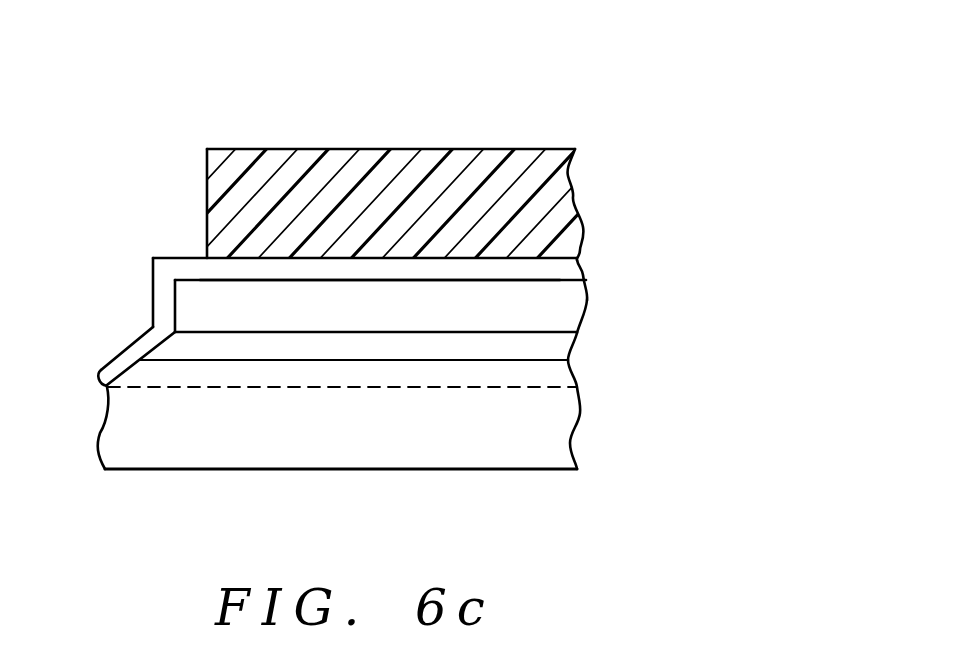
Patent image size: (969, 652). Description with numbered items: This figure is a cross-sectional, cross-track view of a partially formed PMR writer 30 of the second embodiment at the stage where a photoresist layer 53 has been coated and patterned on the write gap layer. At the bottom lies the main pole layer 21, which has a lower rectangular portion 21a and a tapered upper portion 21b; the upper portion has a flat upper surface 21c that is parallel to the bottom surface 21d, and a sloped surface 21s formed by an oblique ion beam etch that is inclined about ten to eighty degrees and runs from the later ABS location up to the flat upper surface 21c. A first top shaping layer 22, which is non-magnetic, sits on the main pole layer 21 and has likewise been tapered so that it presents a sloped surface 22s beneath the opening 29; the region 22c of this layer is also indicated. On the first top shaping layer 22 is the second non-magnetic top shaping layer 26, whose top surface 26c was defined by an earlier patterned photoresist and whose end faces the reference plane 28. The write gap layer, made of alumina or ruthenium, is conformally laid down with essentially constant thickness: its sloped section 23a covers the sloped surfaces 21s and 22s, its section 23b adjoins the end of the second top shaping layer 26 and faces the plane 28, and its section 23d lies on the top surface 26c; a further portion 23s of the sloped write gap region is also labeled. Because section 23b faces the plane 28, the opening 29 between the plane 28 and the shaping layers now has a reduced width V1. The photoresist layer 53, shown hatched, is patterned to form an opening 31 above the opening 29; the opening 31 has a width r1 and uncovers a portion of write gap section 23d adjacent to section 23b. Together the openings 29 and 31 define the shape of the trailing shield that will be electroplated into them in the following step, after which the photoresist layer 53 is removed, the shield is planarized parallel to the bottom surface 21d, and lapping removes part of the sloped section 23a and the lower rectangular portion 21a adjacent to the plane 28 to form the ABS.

The main pole layer 21 is at (371, 415).
The lower rectangular portion 21a is at (463, 453).
The tapered upper portion 21b is at (517, 377).
The flat upper surface 21c is at (297, 362).
The bottom surface 21d is at (362, 472).
The sloped surface 21s is at (127, 372).
The first top shaping layer 22 is at (562, 347).
The layer region 22c is at (398, 333).
The sloped surface 22s is at (163, 340).
The sloped section 23a is at (108, 373).
The section 23b is at (163, 295).
The section 23d is at (567, 268).
The sloped portion of sidewall layer 23s is at (122, 353).
The second non-magnetic top shaping layer 26 is at (565, 300).
The top surface 26c is at (335, 280).
The plane 28 is at (125, 52).
The opening 29 is at (120, 313).
The PMR writer 30 is at (495, 86).
The opening 31 is at (152, 213).
The photoresist layer 53 is at (266, 170).
The width r1 is at (207, 175).
The width V1 is at (152, 268).